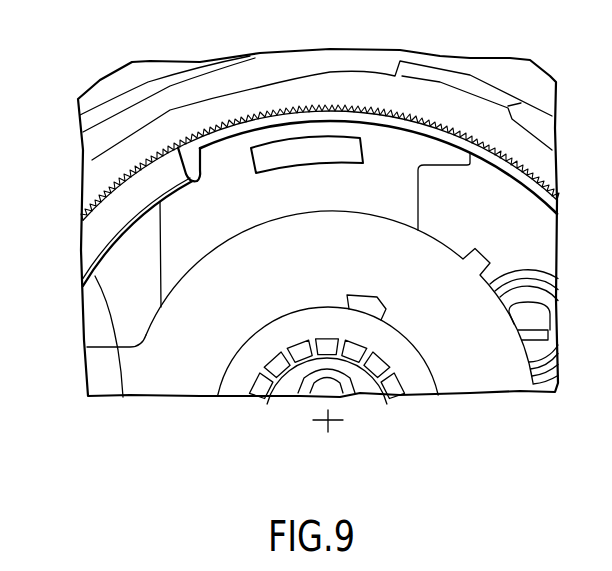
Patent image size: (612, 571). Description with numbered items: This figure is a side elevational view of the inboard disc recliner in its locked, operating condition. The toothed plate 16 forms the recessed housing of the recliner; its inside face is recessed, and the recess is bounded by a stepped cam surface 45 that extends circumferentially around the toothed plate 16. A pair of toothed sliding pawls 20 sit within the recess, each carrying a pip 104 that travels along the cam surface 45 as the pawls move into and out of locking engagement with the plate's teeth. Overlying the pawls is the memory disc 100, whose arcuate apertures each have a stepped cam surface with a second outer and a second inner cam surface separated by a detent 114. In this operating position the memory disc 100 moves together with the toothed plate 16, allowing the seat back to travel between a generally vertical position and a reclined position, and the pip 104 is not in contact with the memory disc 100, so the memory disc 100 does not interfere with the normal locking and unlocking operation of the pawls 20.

The toothed plate 16 is at (268, 88).
The toothed sliding pawls 20 is at (383, 157).
The stepped cam surface 45 is at (123, 397).
The memory disc 100 is at (122, 220).
The pip 104 is at (316, 147).
The detent 114 is at (177, 147).